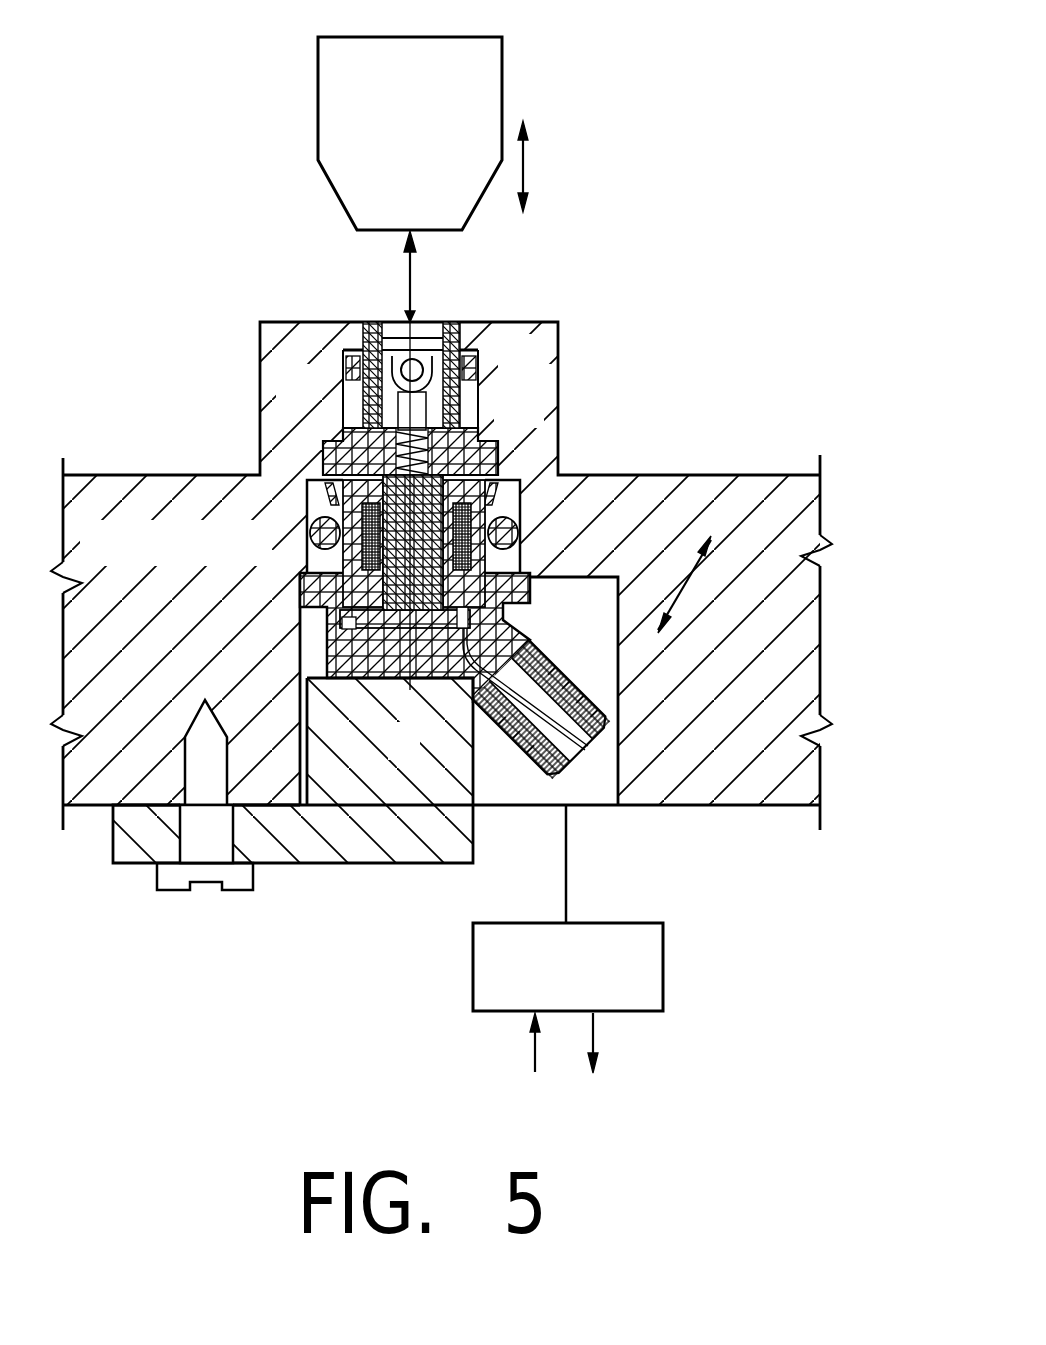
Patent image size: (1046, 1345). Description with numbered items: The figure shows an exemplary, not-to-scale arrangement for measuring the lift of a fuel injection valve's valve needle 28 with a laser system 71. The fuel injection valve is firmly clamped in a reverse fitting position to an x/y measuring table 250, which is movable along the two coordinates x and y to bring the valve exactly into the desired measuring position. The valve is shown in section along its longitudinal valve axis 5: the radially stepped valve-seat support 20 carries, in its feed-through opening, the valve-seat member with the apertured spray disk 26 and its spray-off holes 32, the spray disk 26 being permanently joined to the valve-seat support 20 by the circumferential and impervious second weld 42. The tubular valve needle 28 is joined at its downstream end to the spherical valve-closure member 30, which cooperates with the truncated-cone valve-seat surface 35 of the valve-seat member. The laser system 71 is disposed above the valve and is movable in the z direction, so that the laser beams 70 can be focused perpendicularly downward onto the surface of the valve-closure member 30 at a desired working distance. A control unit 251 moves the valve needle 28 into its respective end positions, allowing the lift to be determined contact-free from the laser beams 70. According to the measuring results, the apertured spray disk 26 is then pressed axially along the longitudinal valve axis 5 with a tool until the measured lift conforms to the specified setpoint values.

The laser system 71 is at (440, 133).
The laser beams 70 is at (413, 287).
The spray-off holes 32 is at (393, 322).
The second weld 42 is at (399, 322).
The apertured spray disk 26 is at (405, 322).
The valve-seat surface 35 is at (468, 340).
The valve-closure member 30 is at (562, 376).
The valve needle 28 is at (443, 405).
The valve-seat support 20 is at (372, 420).
The x/y measuring table 250 is at (222, 440).
The longitudinal valve axis 5 is at (412, 688).
The control unit 251 is at (690, 958).